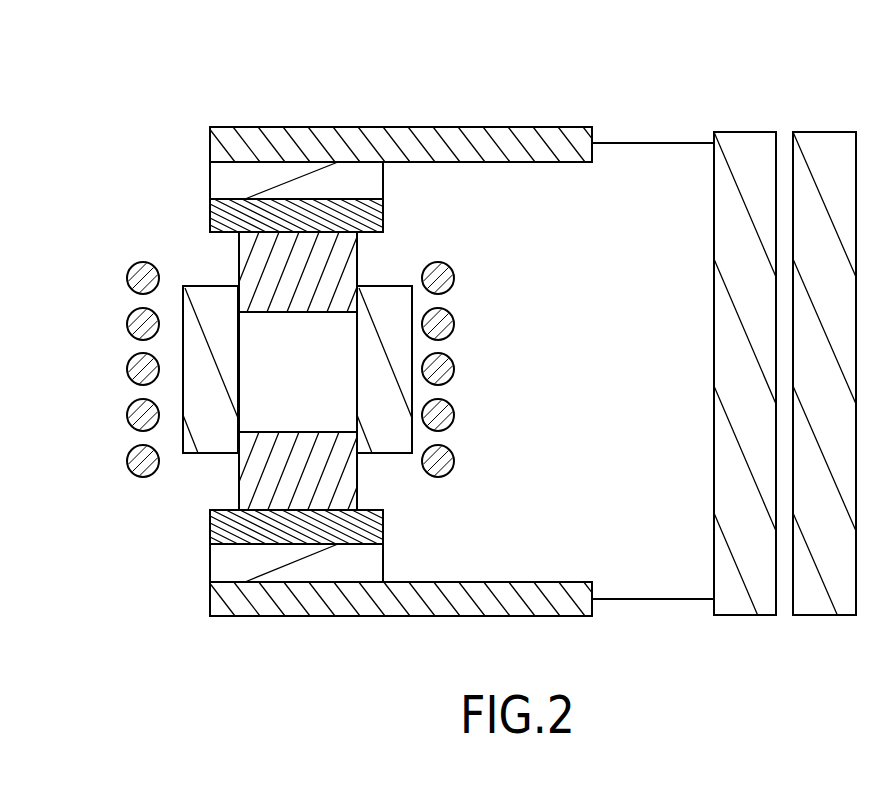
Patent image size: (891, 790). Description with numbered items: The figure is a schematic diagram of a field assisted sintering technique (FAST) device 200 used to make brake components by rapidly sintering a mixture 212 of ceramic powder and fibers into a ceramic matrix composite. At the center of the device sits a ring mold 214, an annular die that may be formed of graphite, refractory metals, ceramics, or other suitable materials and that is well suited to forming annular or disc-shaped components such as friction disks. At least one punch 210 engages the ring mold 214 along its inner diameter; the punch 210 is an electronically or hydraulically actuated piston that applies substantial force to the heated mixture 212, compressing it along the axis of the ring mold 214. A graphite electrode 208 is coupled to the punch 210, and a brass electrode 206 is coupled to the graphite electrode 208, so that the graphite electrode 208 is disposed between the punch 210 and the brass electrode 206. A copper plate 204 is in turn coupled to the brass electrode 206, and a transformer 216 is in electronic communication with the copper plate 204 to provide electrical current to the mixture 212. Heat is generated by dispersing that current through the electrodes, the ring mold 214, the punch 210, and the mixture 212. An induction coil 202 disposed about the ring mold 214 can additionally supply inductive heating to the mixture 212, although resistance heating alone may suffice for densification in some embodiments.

The field assisted sintering technique (FAST) device 200 is at (114, 94).
The induction coil 202 is at (131, 273).
The copper plate 204 is at (521, 138).
The brass electrode 206 is at (217, 181).
The graphite electrode 208 is at (217, 216).
The punch 210 is at (353, 262).
The mixture 212 is at (338, 415).
The ring mold 214 is at (398, 352).
The transformer 216 is at (749, 141).